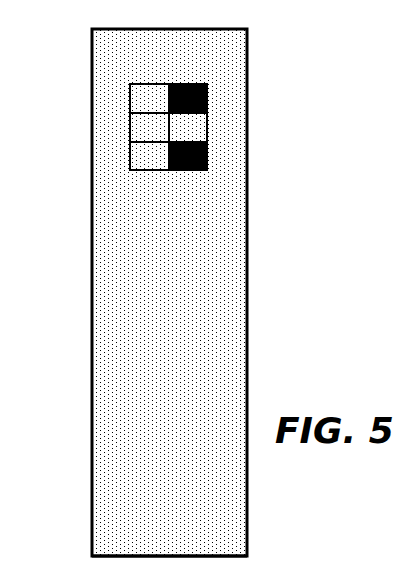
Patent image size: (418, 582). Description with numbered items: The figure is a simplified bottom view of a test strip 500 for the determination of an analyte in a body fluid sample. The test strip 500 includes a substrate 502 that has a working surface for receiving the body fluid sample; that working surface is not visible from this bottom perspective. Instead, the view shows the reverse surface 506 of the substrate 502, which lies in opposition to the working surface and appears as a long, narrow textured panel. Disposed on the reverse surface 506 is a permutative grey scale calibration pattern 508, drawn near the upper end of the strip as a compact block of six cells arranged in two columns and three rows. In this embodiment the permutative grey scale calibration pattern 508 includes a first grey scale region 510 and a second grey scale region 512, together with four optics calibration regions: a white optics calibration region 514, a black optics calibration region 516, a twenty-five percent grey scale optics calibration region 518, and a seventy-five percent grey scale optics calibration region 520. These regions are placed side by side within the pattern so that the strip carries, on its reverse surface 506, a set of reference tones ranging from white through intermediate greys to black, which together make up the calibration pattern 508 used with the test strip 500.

The test strip 500 is at (268, 45).
The substrate 502 is at (238, 565).
The reverse surface 506 is at (242, 315).
The permutative grey scale calibration pattern 508 is at (169, 188).
The first grey scale region 510 is at (207, 128).
The second grey scale region 512 is at (130, 128).
The white optics calibration region 514 is at (130, 157).
The black optics calibration region 516 is at (207, 97).
The 25% grey scale optics calibration region 518 is at (130, 98).
The 75% grey scale optics calibration region 520 is at (207, 158).